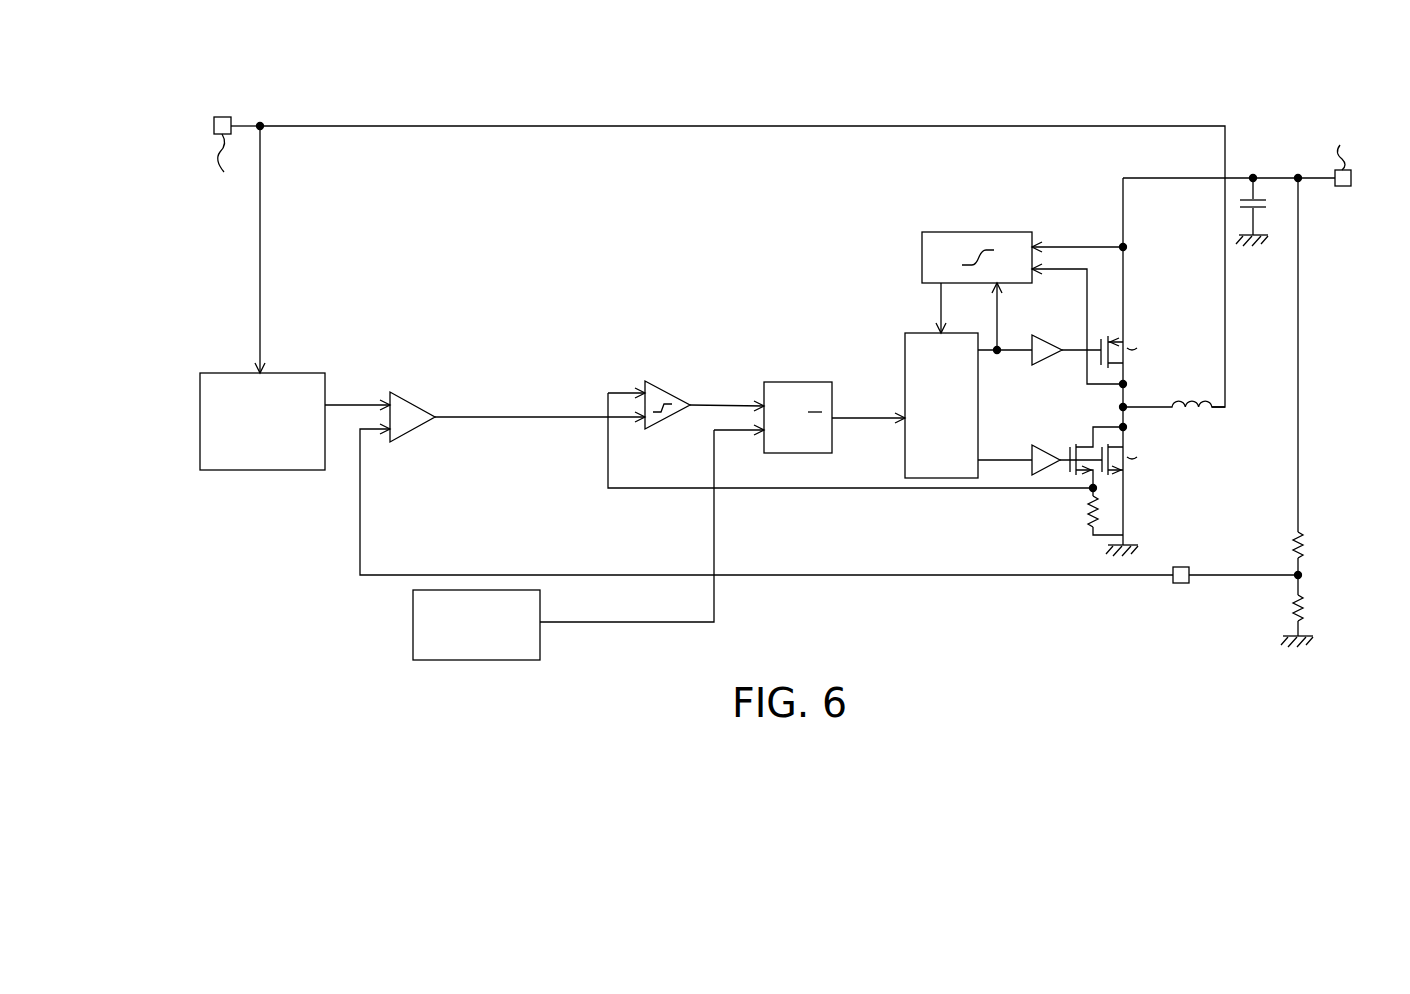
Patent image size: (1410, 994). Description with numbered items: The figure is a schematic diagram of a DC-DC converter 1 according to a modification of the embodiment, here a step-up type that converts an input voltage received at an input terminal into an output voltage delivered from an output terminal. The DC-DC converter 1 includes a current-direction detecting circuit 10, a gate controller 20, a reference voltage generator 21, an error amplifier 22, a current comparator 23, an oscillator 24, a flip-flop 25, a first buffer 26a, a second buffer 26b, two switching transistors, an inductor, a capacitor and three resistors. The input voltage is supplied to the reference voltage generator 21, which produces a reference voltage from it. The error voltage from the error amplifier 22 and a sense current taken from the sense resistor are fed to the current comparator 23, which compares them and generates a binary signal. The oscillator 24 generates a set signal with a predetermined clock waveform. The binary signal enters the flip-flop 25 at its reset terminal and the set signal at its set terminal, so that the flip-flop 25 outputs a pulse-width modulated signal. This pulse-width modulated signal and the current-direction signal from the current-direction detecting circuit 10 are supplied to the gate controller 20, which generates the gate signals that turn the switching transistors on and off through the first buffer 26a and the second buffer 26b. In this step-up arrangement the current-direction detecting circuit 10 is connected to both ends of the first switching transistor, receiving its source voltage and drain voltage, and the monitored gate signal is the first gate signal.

The DC-DC converter 1 is at (333, 70).
The current-direction detecting circuit 10 is at (975, 232).
The gate controller 20 is at (904, 363).
The reference voltage generator 21 is at (262, 472).
The error amplifier 22 is at (412, 395).
The current comparator 23 is at (665, 385).
The oscillator 24 is at (413, 622).
The flip-flop 25 is at (799, 382).
The first buffer 26a is at (1040, 336).
The second buffer 26b is at (1045, 446).